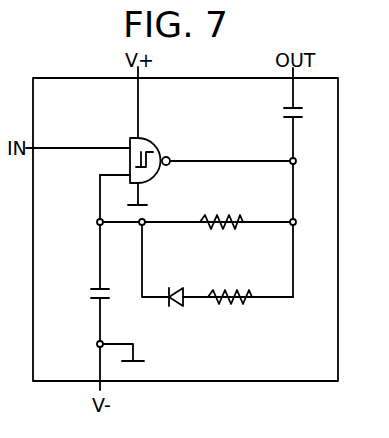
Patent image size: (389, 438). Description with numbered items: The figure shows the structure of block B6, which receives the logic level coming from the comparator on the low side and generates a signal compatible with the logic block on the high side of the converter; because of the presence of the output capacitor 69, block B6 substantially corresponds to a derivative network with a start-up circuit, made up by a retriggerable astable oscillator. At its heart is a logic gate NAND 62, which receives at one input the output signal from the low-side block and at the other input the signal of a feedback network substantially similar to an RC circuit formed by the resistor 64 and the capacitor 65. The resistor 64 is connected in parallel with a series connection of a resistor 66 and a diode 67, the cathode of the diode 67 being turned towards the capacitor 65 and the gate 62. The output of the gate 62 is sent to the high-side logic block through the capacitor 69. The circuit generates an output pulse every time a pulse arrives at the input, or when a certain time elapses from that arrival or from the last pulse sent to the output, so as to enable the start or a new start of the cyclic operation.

The logic gate NAND 62 is at (163, 150).
The resistor 64 is at (207, 221).
The capacitor 65 is at (98, 283).
The resistor 66 is at (237, 293).
The diode 67 is at (172, 305).
The capacitor 69 is at (298, 120).
The block B6 is at (339, 78).